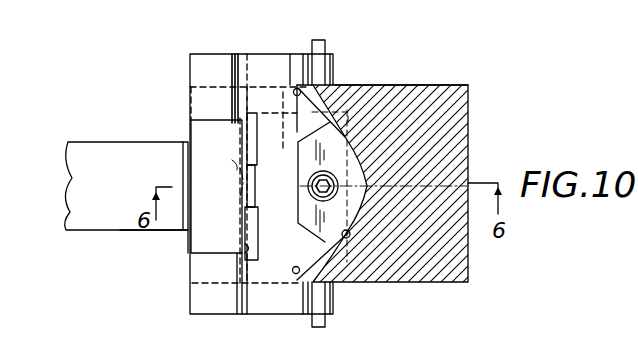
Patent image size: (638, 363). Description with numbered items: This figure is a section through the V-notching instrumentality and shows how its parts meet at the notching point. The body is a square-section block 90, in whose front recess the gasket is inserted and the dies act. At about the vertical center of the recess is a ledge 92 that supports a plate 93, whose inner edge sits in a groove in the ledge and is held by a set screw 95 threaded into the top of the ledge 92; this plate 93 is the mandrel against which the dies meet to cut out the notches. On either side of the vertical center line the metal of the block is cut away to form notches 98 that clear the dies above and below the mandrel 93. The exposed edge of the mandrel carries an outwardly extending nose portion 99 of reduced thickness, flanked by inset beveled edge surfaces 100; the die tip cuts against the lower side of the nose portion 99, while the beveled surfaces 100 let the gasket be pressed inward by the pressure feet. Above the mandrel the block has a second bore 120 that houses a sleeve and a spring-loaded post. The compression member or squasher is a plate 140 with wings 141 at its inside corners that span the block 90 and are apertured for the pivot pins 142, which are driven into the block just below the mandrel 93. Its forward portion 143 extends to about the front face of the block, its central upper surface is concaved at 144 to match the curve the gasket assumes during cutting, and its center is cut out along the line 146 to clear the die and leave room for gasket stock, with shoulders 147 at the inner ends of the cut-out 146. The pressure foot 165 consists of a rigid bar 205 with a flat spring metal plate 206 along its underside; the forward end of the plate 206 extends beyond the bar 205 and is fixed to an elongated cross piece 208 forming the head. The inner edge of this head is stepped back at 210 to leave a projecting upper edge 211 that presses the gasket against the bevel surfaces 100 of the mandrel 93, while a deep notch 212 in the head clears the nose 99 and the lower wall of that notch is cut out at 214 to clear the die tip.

The block 90 is at (468, 136).
The ledge 92 is at (368, 84).
The plate 93 is at (263, 133).
The set screw 95 is at (308, 187).
The notches 98 is at (300, 140).
The nose portion 99 is at (247, 200).
The beveled edge surfaces 100 is at (246, 233).
The second bore 120 is at (349, 238).
The plate 140 is at (189, 57).
The wings 141 is at (334, 74).
The pivot pins 142 is at (322, 40).
The forward portion 143 is at (207, 56).
The concavity 144 is at (292, 58).
The cut-out portion 146 is at (272, 128).
The shoulders 147 is at (294, 90).
The pressure feet 165 is at (64, 164).
The rigid bar 205 is at (120, 231).
The flat spring metal plate 206 is at (188, 236).
The cross piece 208 is at (192, 263).
The stepped-back inner edge 210 is at (236, 120).
The projecting upper edge 211 is at (243, 258).
The deep notch 212 is at (234, 163).
The cut-out 214 is at (240, 182).